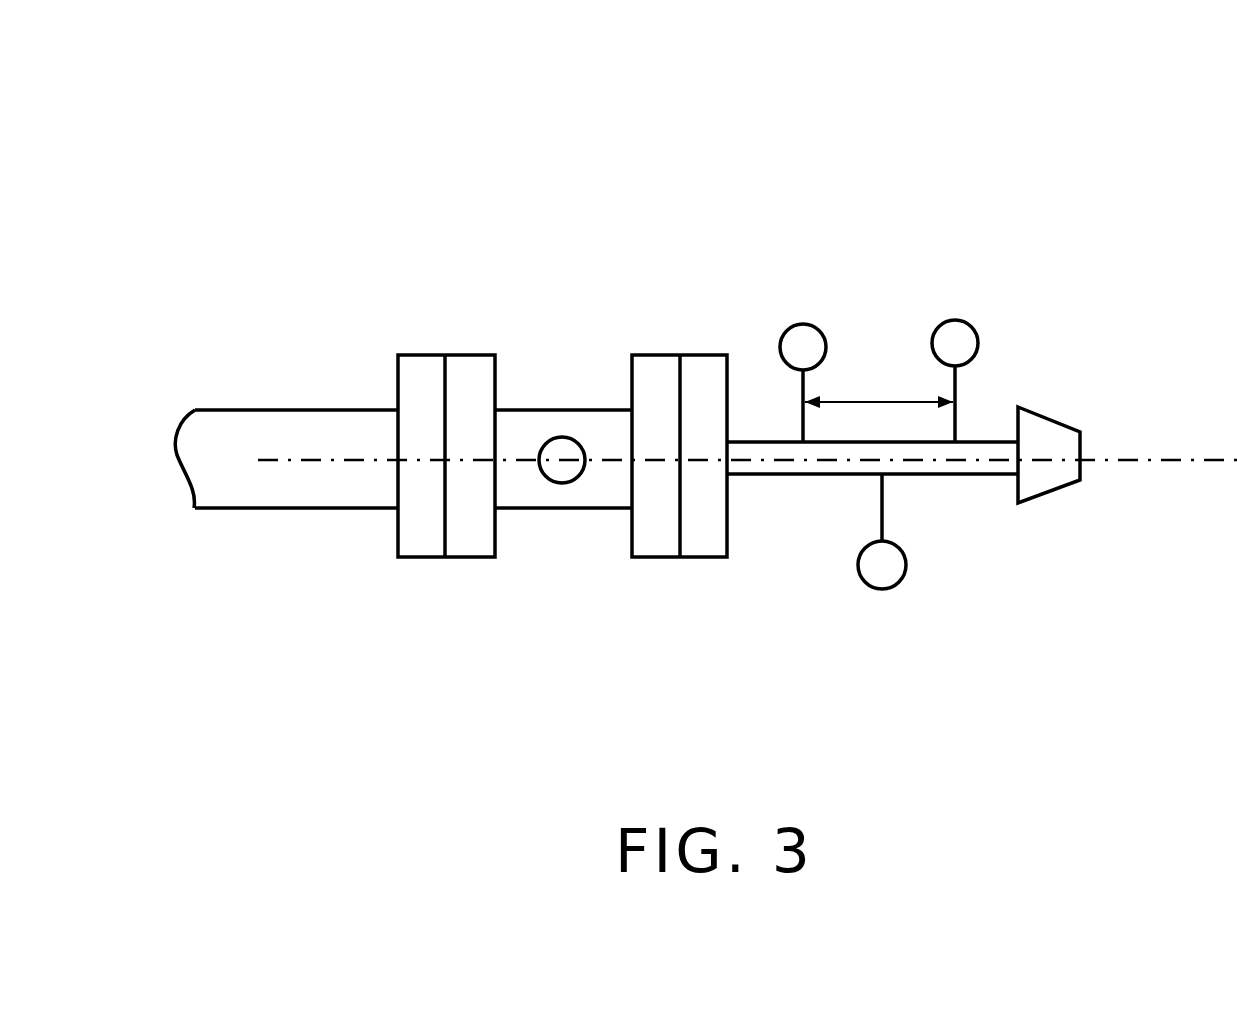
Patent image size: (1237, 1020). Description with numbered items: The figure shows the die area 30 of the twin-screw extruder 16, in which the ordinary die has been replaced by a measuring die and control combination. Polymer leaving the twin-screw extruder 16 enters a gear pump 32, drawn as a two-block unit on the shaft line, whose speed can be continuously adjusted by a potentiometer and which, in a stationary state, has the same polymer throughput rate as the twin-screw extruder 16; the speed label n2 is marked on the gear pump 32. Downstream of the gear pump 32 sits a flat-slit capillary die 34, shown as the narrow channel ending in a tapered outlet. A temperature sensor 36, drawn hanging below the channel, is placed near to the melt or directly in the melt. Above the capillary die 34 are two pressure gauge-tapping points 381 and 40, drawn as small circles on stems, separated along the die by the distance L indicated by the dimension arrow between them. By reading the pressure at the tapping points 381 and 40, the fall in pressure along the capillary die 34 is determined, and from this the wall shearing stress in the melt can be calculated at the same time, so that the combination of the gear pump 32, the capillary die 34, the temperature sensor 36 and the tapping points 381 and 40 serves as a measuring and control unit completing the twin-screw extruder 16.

The twin-screw extruder 16 is at (217, 448).
The die area 30 is at (1092, 218).
The gear pump 32 is at (592, 323).
The flat-slit capillary die 34 is at (965, 460).
The temperature sensor 36 is at (898, 578).
The pressure gauge-tapping point 381 is at (818, 338).
The pressure gauge-tapping point 40 is at (955, 332).
The rotational speed n2 is at (560, 480).
The sensor spacing L is at (879, 374).